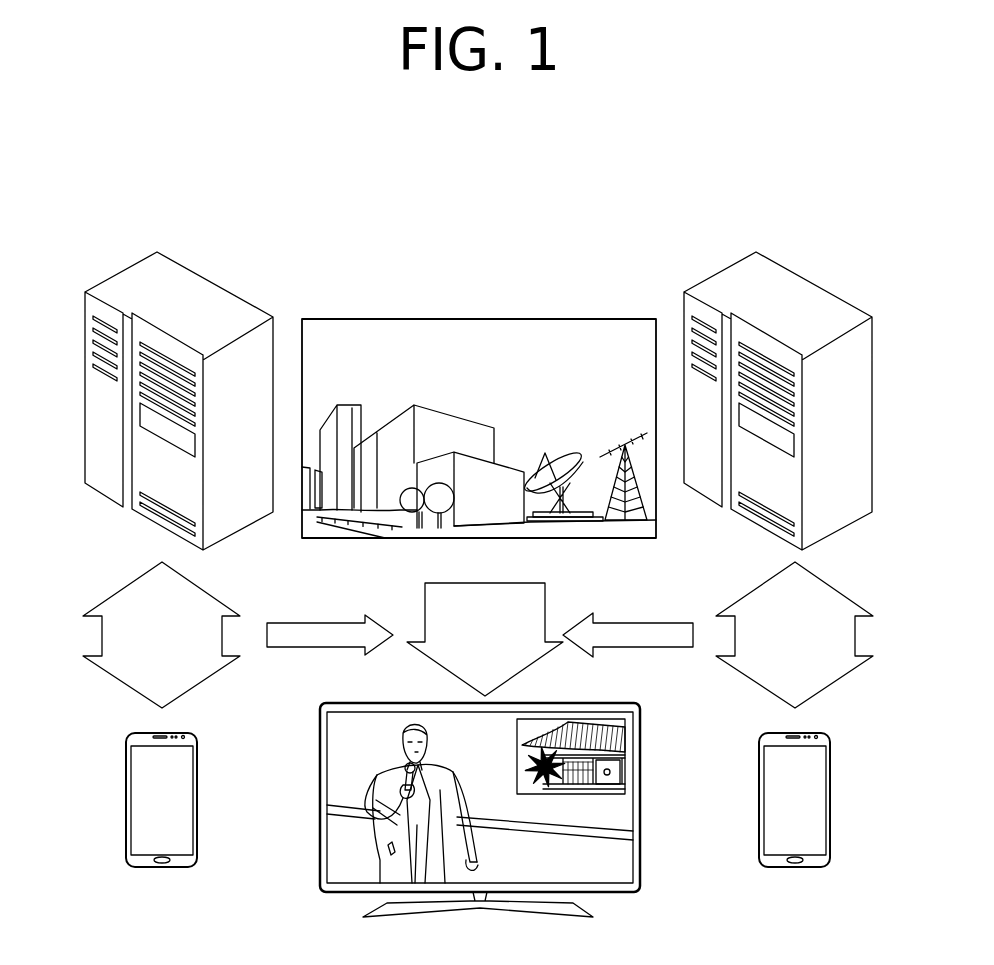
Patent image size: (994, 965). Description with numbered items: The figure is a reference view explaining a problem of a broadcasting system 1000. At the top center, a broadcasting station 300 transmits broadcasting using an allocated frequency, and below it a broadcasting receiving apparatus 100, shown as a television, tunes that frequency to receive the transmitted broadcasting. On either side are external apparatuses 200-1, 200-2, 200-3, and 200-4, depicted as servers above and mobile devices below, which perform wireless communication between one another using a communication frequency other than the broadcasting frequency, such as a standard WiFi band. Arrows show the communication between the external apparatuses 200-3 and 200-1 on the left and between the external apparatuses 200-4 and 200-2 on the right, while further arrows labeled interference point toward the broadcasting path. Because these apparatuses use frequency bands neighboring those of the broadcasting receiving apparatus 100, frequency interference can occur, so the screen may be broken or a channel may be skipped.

The broadcasting system 1000 is at (495, 180).
The broadcasting receiving apparatus 100 is at (607, 703).
The external apparatus 200-1 is at (197, 768).
The external apparatus 200-2 is at (759, 768).
The external apparatus 200-3 is at (133, 272).
The external apparatus 200-4 is at (730, 272).
The broadcasting station 300 is at (572, 453).